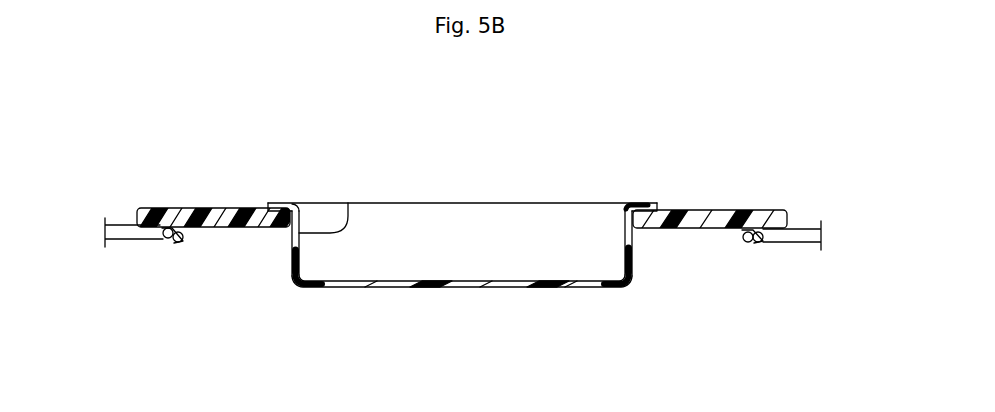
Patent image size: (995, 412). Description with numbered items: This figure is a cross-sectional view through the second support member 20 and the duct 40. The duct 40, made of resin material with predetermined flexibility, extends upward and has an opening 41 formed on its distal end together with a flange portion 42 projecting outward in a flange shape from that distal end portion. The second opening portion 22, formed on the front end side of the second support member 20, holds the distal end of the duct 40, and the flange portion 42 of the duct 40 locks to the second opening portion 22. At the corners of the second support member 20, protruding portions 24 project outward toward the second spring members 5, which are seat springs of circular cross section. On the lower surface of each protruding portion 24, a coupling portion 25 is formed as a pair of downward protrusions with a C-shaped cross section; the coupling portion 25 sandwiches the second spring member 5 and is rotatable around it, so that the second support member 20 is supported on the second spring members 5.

The second spring member 5 is at (137, 236).
The second support member 20 is at (797, 102).
The second opening portion 22 is at (300, 223).
The protruding portion 24 is at (723, 216).
The coupling portion 25 is at (183, 243).
The duct 40 is at (516, 112).
The opening 41 is at (348, 203).
The flange portion 42 is at (647, 204).